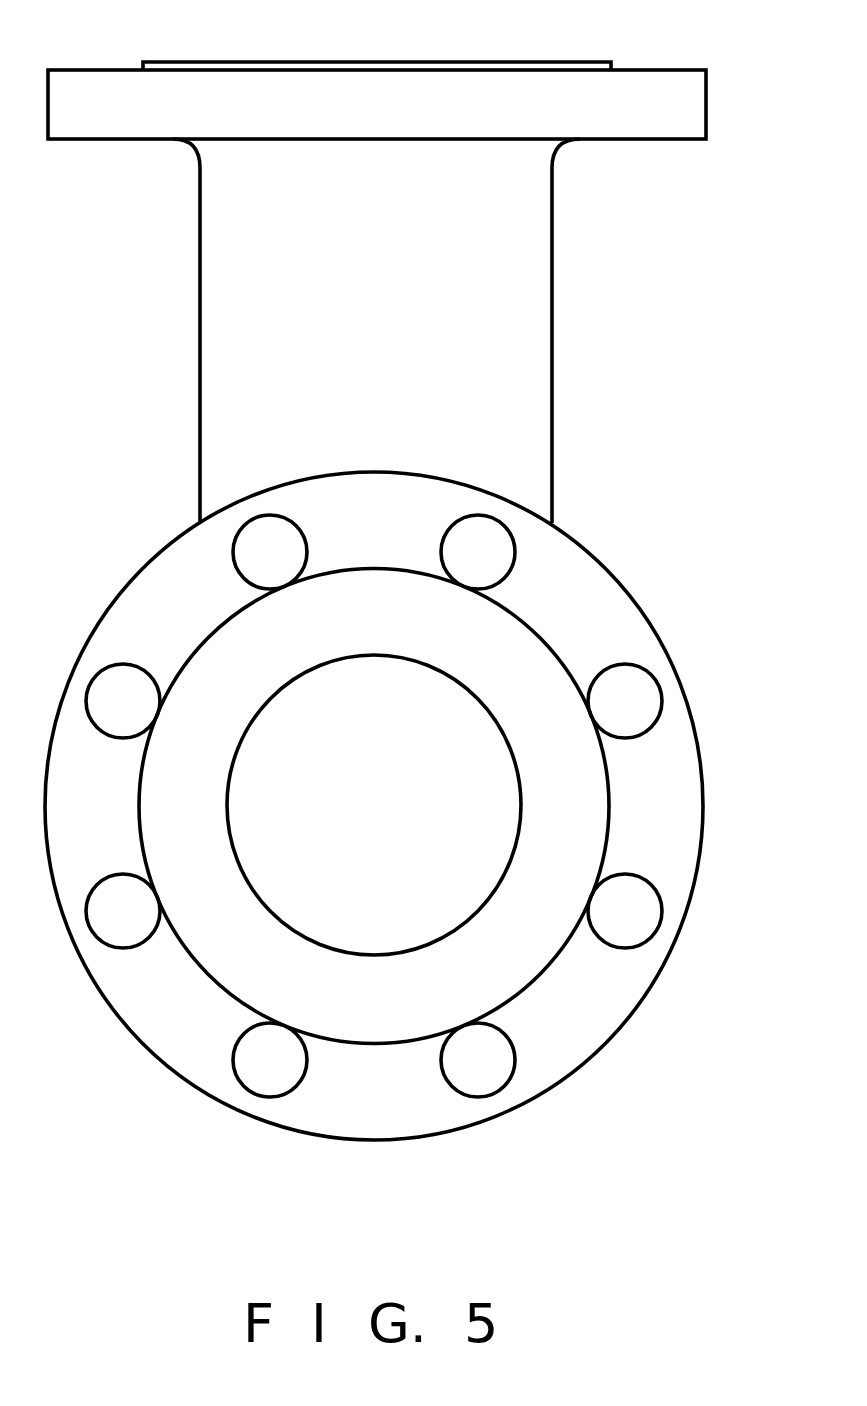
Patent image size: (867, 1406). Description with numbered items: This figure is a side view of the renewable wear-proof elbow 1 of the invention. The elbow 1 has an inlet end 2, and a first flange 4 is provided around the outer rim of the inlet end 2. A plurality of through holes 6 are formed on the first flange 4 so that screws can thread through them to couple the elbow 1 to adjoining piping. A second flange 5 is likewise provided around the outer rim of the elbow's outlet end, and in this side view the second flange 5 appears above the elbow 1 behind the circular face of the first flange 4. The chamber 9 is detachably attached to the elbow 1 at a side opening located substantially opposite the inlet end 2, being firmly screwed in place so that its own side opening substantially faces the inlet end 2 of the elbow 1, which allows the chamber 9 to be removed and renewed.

The elbow 1 is at (205, 328).
The inlet end 2 is at (483, 890).
The first flange 4 is at (687, 747).
The second flange 5 is at (682, 78).
The through holes 6 is at (640, 678).
The chamber 9 is at (733, 847).